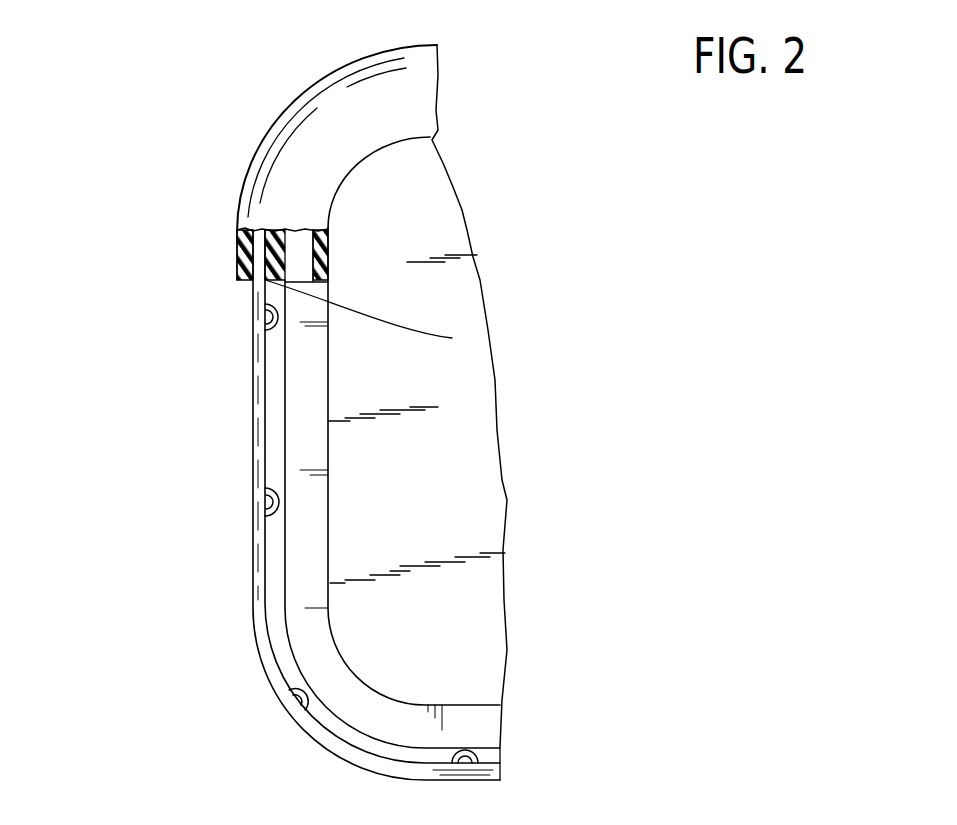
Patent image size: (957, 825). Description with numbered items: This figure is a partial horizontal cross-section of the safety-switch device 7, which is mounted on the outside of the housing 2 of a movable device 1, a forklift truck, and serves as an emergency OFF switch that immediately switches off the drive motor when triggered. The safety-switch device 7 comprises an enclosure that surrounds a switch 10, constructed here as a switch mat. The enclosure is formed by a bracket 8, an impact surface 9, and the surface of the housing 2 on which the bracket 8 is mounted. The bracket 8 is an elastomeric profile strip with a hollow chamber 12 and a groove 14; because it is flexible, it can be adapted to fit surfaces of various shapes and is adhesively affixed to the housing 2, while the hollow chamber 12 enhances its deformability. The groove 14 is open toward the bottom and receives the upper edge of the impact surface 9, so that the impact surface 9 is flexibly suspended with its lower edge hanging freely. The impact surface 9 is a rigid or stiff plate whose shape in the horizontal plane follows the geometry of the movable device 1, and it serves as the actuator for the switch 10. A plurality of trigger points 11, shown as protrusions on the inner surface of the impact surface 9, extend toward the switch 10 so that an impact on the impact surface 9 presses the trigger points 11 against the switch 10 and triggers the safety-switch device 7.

The movable device 1 is at (583, 198).
The housing 2 is at (447, 498).
The safety-switch device 7 is at (150, 208).
The bracket 8 is at (290, 185).
The impact surface 9 is at (258, 470).
The switch 10 is at (305, 583).
The trigger points 11 is at (275, 317).
The hollow chamber 12 is at (298, 270).
The groove 14 is at (452, 338).